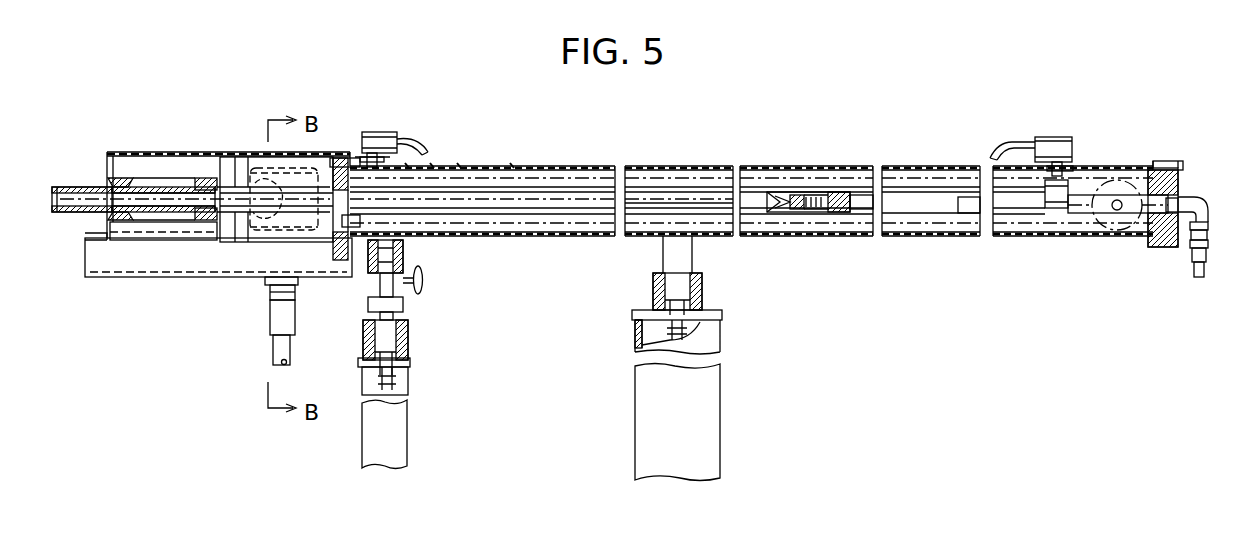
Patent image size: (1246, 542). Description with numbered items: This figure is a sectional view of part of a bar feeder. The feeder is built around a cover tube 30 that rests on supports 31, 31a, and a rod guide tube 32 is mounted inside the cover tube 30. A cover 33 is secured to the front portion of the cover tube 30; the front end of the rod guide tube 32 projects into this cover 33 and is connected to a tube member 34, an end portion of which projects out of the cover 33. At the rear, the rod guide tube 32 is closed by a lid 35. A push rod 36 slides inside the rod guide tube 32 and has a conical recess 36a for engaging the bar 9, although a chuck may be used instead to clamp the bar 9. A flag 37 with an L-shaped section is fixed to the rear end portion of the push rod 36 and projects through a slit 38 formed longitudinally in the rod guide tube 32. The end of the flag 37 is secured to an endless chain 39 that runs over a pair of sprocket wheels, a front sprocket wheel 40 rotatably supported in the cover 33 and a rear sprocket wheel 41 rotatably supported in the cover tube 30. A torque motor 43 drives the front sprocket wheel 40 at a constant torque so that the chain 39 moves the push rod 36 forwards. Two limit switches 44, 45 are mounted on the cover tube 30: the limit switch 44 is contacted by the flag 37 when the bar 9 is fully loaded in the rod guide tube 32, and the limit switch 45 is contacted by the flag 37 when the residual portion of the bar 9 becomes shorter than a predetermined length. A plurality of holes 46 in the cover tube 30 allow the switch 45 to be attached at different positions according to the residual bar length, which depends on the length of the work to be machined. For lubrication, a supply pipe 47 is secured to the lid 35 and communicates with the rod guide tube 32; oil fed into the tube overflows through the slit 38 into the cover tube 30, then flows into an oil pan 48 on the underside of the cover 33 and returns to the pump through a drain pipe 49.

The bar 9 is at (710, 205).
The cover tube 30 is at (543, 236).
The support 31 is at (397, 440).
The support 31a is at (705, 435).
The rod guide tube 32 is at (556, 195).
The cover 33 is at (146, 152).
The tube member 34 is at (93, 186).
The lid 35 is at (1182, 182).
The push rod 36 is at (968, 195).
The conical recess 36a is at (782, 212).
The flag 37 is at (1060, 210).
The slit 38 is at (660, 188).
The endless chain 39 is at (806, 178).
The front sprocket wheel 40 is at (270, 185).
The rear sprocket wheel 41 is at (1128, 186).
The torque motor 43 is at (320, 152).
The limit switch 44 is at (1062, 137).
The limit switch 45 is at (386, 132).
The holes 46 is at (512, 162).
The supply pipe 47 is at (1196, 252).
The oil pan 48 is at (155, 280).
The drain pipe 49 is at (270, 328).